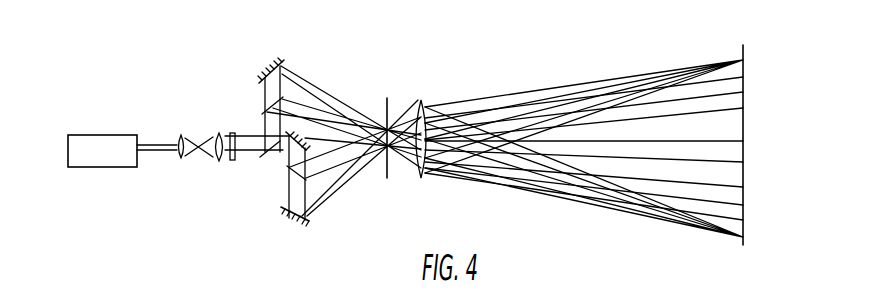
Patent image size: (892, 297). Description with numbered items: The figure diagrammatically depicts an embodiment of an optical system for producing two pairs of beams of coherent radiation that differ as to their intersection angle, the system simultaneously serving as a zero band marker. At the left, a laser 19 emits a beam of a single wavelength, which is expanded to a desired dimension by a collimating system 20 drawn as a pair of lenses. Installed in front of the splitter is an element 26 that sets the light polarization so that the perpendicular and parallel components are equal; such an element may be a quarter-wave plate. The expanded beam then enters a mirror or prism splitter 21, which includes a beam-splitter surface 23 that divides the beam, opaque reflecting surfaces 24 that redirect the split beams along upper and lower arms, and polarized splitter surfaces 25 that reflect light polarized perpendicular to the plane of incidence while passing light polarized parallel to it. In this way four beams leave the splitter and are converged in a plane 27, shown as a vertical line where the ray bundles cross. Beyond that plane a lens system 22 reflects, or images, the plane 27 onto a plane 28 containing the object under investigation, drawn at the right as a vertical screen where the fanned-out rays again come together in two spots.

The laser 19 is at (116, 141).
The collimating system 20 is at (199, 149).
The mirror or prism splitter 21 is at (307, 41).
The lens system 22 is at (422, 102).
The beam-splitter surface 23 is at (243, 156).
The opaque reflecting surfaces 24 is at (264, 68).
The polarized splitter surfaces 25 is at (263, 105).
The element setting light polarization 26 is at (223, 158).
The plane 27 is at (388, 98).
The plane 28 is at (741, 52).